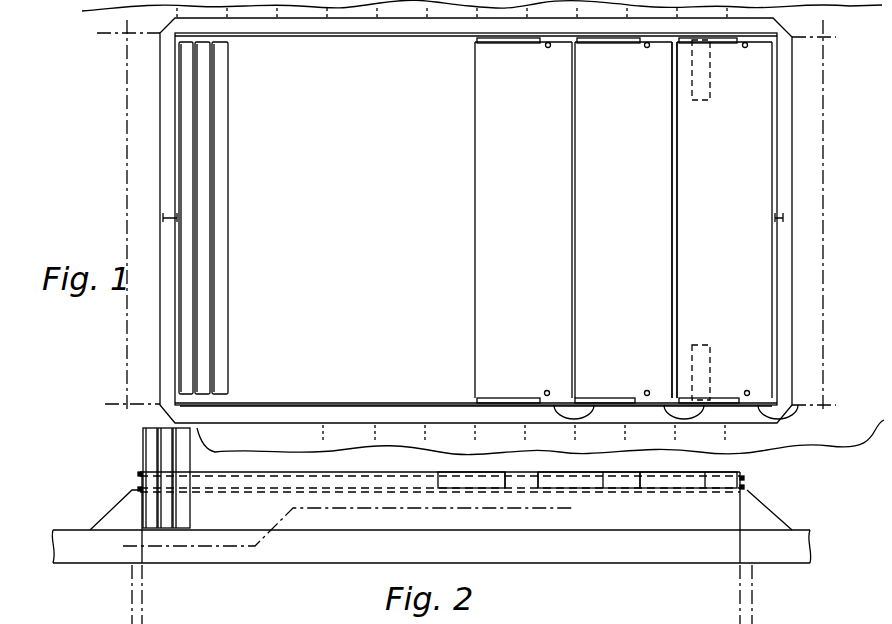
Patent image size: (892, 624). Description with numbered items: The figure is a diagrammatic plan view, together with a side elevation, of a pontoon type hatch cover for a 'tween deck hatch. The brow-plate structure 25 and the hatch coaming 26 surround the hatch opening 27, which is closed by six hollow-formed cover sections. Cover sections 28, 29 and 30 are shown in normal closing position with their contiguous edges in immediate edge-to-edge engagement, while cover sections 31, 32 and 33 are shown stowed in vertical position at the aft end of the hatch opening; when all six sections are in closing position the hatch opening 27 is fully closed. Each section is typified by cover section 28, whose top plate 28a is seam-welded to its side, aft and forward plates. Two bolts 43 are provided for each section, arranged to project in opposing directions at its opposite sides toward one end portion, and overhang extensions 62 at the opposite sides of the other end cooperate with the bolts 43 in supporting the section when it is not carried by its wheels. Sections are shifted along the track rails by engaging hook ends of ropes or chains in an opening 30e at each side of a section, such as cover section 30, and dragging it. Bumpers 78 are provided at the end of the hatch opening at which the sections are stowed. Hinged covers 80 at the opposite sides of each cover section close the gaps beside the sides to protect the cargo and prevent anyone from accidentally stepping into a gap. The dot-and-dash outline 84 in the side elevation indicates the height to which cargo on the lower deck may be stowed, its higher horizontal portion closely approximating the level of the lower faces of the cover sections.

In FIG. 1, the brow-plate structure 25 is at (724, 413).
In FIG. 1, the hatch coaming 26 is at (292, 403).
In FIG. 1, the hatch opening 27 is at (350, 240).
In FIG. 1, the cover section 28 is at (724, 220).
In FIG. 2, the cover section 28 is at (665, 481).
In FIG. 1, the top plate 28a is at (677, 192).
In FIG. 1, the cover section 29 is at (623, 220).
In FIG. 2, the cover section 29 is at (583, 484).
In FIG. 1, the cover section 30 is at (523, 220).
In FIG. 2, the cover section 30 is at (473, 484).
In FIG. 1, the opening 30e is at (547, 391).
In FIG. 1, the cover section 31 is at (220, 308).
In FIG. 1, the cover section 32 is at (208, 218).
In FIG. 1, the cover section 33 is at (188, 142).
In FIG. 1, the bolt 43 is at (710, 84).
In FIG. 1, the overhang extension 62 is at (783, 34).
In FIG. 1, the bumper 78 is at (170, 216).
In FIG. 1, the hinged cover 80 is at (623, 40).
In FIG. 2, the dot-and-dash outline 84 is at (345, 531).